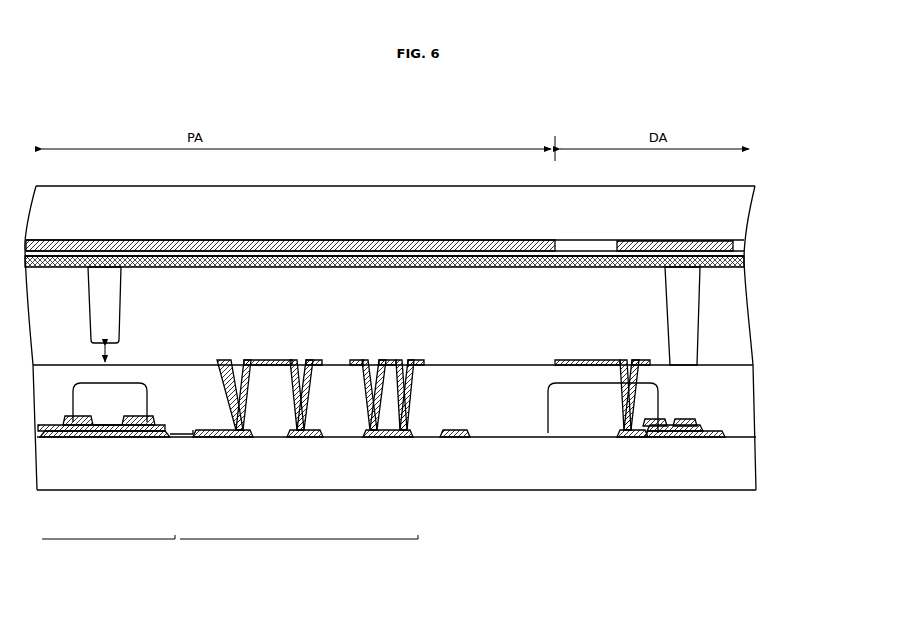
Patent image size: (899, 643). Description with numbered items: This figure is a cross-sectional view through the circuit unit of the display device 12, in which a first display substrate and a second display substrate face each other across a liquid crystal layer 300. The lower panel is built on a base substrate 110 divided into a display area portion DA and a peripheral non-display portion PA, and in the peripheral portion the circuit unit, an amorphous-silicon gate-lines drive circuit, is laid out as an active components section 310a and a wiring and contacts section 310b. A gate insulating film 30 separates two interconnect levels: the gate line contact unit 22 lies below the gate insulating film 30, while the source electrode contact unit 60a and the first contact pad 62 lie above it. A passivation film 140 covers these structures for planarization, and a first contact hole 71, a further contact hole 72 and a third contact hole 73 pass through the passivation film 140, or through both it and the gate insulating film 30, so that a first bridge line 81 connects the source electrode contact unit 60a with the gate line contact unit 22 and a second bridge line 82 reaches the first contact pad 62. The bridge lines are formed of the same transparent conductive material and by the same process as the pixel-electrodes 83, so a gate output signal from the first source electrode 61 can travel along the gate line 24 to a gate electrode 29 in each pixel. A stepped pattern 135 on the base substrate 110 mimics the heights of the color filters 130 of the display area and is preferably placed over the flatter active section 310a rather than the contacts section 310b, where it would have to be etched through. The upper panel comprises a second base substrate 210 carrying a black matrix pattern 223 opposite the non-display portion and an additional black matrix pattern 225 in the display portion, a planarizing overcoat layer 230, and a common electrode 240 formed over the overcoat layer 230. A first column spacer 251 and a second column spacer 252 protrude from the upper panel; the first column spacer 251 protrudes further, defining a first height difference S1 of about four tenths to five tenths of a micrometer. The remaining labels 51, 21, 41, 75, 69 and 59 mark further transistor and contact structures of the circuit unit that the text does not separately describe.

The display device 12 is at (747, 129).
The second base substrate 210 is at (738, 222).
The planarizing overcoat layer 230 is at (417, 207).
The black matrix pattern 223 is at (372, 243).
The additional black matrix pattern 225 is at (676, 245).
The common electrode 240 is at (742, 262).
The second column spacer 252 is at (122, 301).
The first height difference S1 is at (107, 352).
The first column spacer 251 is at (695, 307).
The liquid crystal layer 300 is at (742, 336).
The passivation film 140 is at (745, 395).
The base substrate 110 is at (745, 466).
The source electrode of first transistor 51 is at (62, 440).
The stepped pattern 135 is at (88, 437).
The gate electrode 21 is at (110, 437).
The first source electrode 61 is at (130, 437).
The drain electrode 41 is at (152, 432).
The gate insulating film 30 is at (197, 437).
The source electrode contact unit 60a is at (228, 437).
The first contact hole 71 is at (240, 340).
The first bridge line 81 is at (258, 360).
The contact hole 72 is at (303, 340).
The gate line contact unit 22 is at (300, 437).
The second bridge line 82 is at (358, 360).
The third contact hole 73 is at (373, 340).
The first contact pad 62 is at (380, 437).
The gate line 24 is at (450, 437).
The color filters 130 is at (578, 430).
The pixel-electrodes 83 is at (586, 360).
The fourth connection electrode 75 is at (630, 340).
The contact pad 69 is at (622, 437).
The gate electrode 29 is at (665, 437).
The source electrode of second transistor 59 is at (700, 437).
The active components section 310a is at (108, 549).
The wiring and contacts section 310b is at (299, 549).